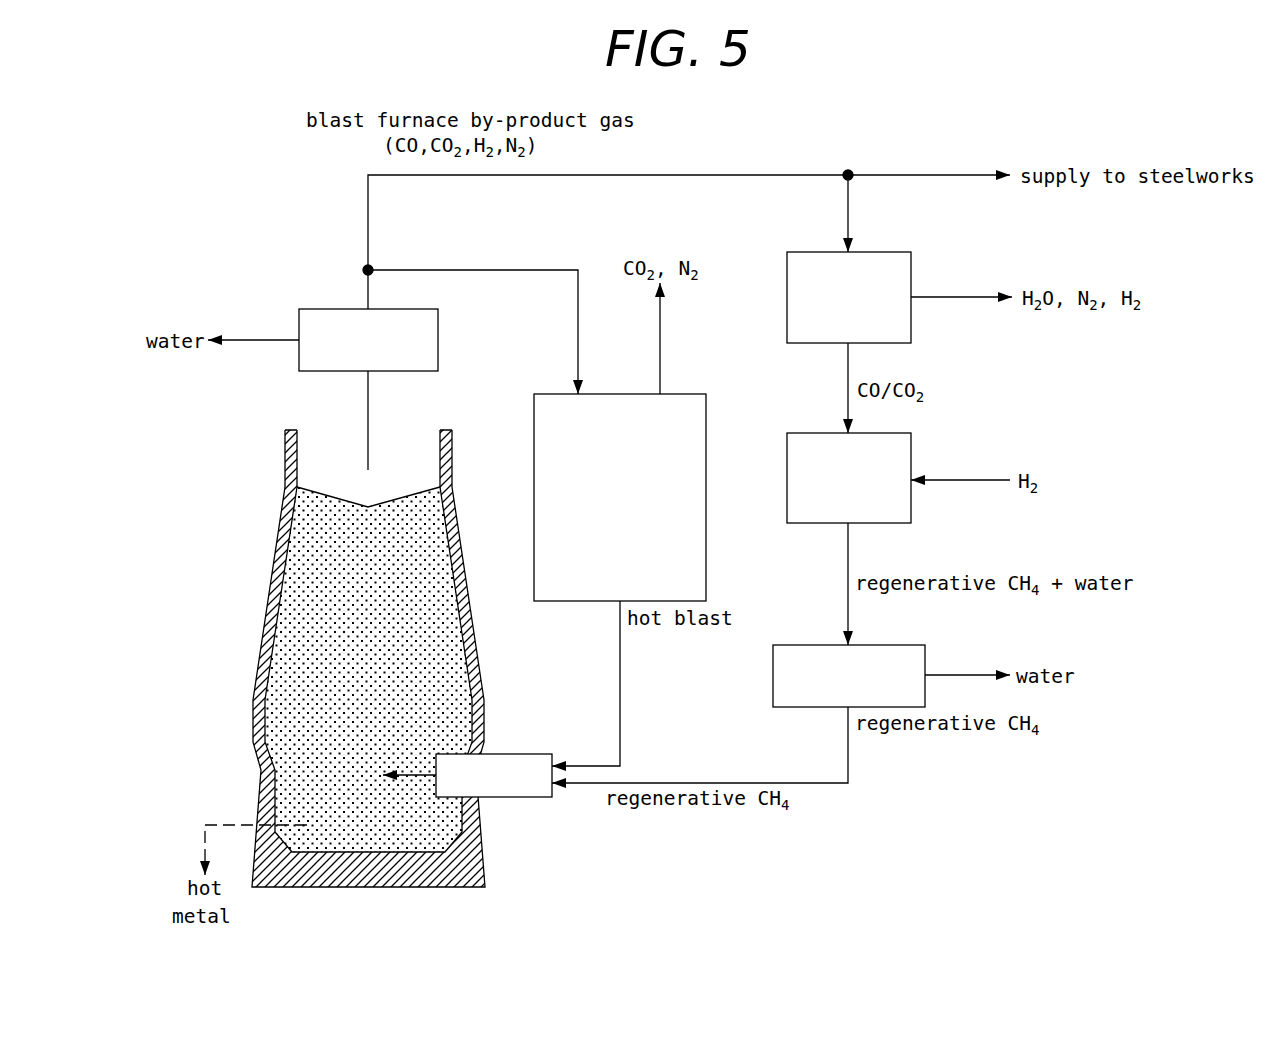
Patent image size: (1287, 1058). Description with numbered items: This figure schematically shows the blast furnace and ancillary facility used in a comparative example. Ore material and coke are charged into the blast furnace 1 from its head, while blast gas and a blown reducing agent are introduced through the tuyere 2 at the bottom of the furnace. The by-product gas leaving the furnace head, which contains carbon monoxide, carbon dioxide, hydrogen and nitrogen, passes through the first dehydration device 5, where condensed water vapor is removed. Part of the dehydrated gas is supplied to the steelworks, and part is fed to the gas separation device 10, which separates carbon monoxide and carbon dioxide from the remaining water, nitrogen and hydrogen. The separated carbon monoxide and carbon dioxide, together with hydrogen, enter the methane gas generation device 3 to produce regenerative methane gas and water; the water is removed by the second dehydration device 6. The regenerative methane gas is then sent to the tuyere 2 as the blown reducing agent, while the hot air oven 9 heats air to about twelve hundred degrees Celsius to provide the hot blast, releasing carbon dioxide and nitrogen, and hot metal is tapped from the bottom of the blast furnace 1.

The blast furnace 1 is at (266, 612).
The tuyere 2 is at (525, 754).
The methane gas generation device 3 is at (911, 443).
The first dehydration device 5 is at (324, 309).
The second dehydration device 6 is at (925, 655).
The hot air oven 9 is at (706, 423).
The gas separation device 10 is at (911, 260).